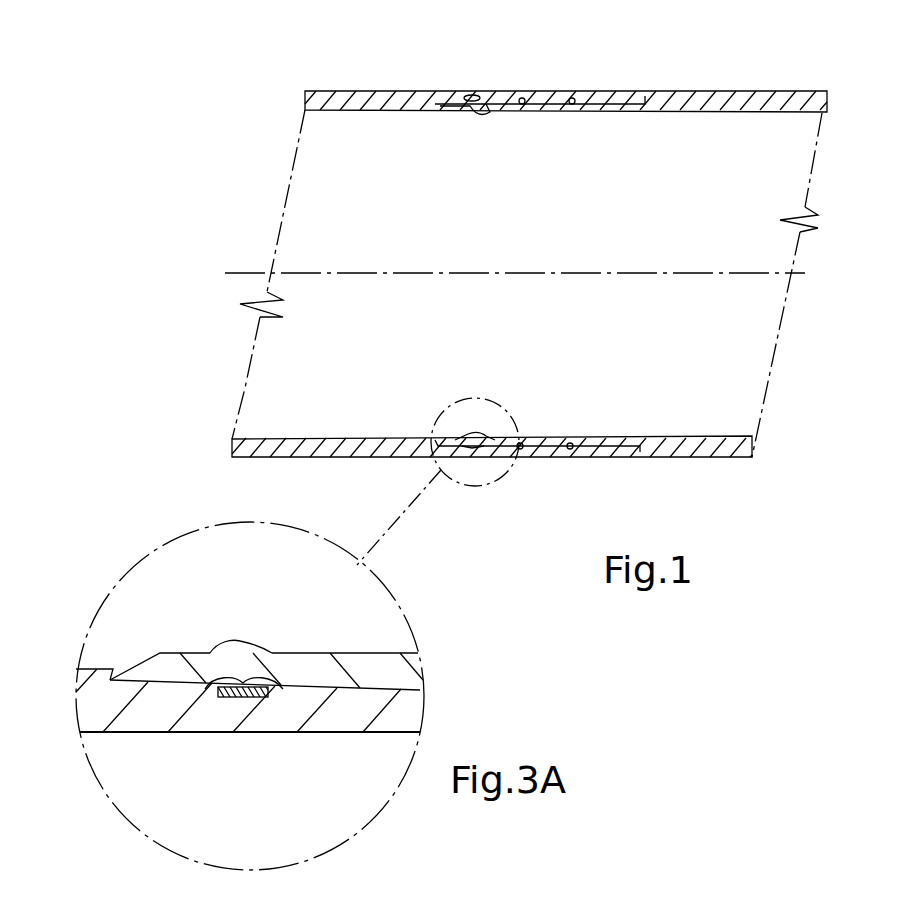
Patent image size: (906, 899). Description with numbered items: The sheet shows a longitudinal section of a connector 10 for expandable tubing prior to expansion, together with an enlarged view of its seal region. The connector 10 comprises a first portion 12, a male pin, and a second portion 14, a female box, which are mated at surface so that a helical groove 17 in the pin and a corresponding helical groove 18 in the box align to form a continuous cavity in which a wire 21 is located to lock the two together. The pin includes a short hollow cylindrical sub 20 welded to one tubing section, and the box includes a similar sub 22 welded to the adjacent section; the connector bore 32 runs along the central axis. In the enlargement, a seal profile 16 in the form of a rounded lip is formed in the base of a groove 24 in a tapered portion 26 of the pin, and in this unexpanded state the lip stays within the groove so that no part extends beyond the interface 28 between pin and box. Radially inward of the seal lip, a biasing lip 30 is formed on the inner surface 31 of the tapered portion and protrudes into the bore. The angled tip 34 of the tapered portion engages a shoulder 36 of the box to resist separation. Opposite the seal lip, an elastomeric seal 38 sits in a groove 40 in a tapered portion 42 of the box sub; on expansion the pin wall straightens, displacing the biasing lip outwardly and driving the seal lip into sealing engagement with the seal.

In FIG. 1, the connector 10 is at (590, 62).
In FIG. 1, the first portion 12 is at (740, 90).
In FIG. 1, the second portion 14 is at (340, 90).
In FIG. 3A, the seal profile 16 is at (230, 695).
In FIG. 1, the helical groove 17 is at (575, 104).
In FIG. 1, the helical groove 18 is at (532, 92).
In FIG. 1, the sub 20 is at (697, 454).
In FIG. 1, the wire 21 is at (521, 104).
In FIG. 1, the sub 22 is at (345, 452).
In FIG. 3A, the groove 24 is at (270, 700).
In FIG. 1, the tapered portion 26 is at (563, 440).
In FIG. 3A, the tapered portion 26 is at (392, 652).
In FIG. 3A, the interface 28 is at (178, 686).
In FIG. 3A, the biasing lip 30 is at (248, 650).
In FIG. 3A, the inner surface 31 is at (312, 653).
In FIG. 1, the connector bore 32 is at (518, 257).
In FIG. 3A, the tip 34 is at (128, 655).
In FIG. 3A, the shoulder 36 is at (95, 668).
In FIG. 3A, the seal 38 is at (248, 698).
In FIG. 3A, the groove 40 is at (215, 682).
In FIG. 1, the tapered portion 42 is at (542, 453).
In FIG. 3A, the tapered portion 42 is at (101, 736).